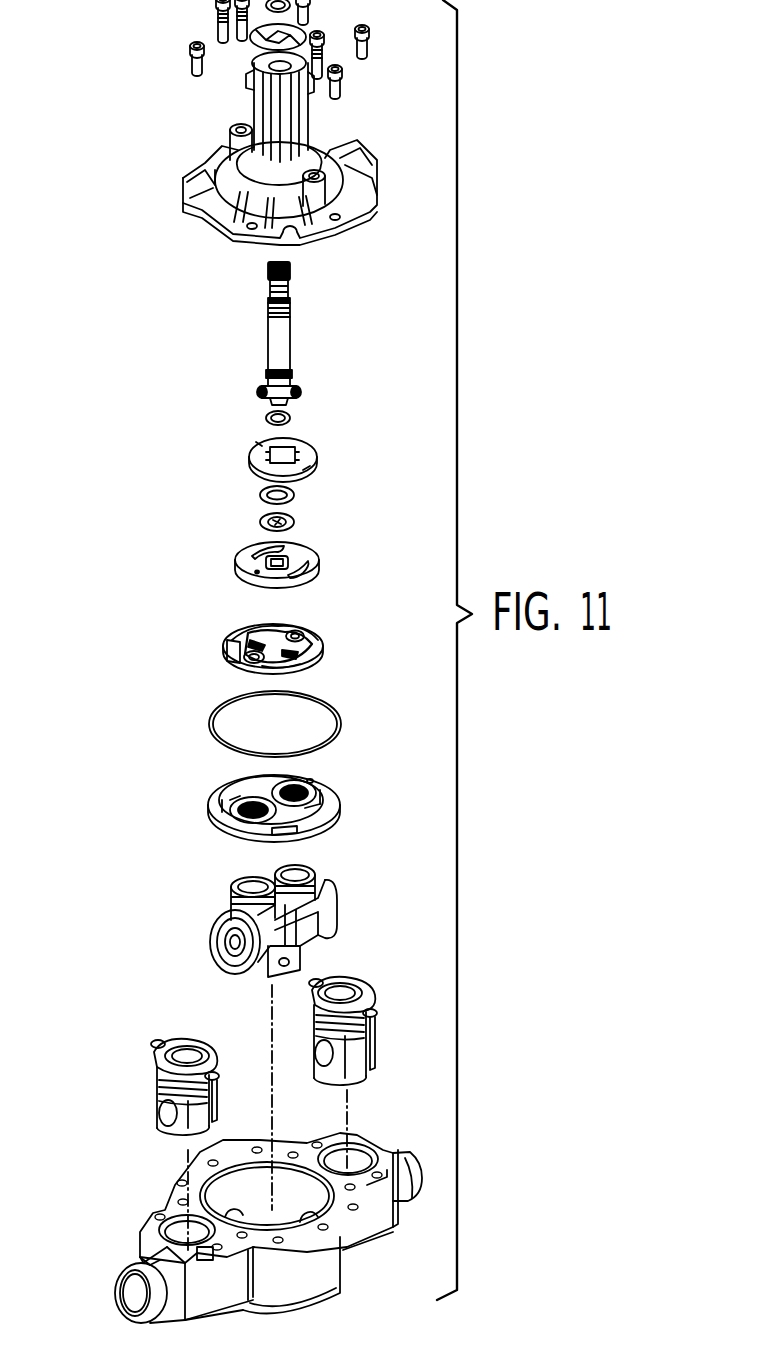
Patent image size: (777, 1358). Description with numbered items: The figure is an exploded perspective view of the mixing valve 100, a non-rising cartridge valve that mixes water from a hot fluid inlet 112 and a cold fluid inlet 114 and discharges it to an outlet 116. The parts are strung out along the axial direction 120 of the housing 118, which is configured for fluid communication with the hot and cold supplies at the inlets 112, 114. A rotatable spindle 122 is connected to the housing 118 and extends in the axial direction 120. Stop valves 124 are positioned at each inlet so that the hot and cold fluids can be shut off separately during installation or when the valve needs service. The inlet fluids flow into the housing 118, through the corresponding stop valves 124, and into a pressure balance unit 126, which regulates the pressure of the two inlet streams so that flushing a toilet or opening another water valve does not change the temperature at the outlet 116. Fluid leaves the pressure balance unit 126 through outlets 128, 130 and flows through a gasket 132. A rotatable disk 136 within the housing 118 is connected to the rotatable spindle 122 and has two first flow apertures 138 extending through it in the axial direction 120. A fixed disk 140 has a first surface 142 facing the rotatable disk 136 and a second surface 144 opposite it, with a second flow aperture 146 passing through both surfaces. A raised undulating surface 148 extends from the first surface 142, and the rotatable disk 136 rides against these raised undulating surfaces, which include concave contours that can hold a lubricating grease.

The valve 100 is at (457, 752).
The hot fluid inlet 112 is at (400, 1153).
The cold fluid inlet 114 is at (241, 1211).
The outlet 116 is at (233, 1203).
The housing 118 is at (185, 200).
The axial direction 120 is at (280, 983).
The rotatable spindle 122 is at (268, 333).
The stop valves 124 is at (362, 1050).
The pressure balance unit 126 is at (262, 906).
The outlet 128 is at (233, 882).
The outlet 130 is at (307, 870).
The gasket 132 is at (222, 800).
The rotatable disk 136 is at (252, 556).
The first flow aperture 138 is at (264, 546).
The fixed disk 140 is at (270, 650).
The first surface 142 is at (310, 648).
The second surface 144 is at (298, 665).
The second flow aperture 146 is at (305, 633).
The undulating surface 148 is at (243, 635).